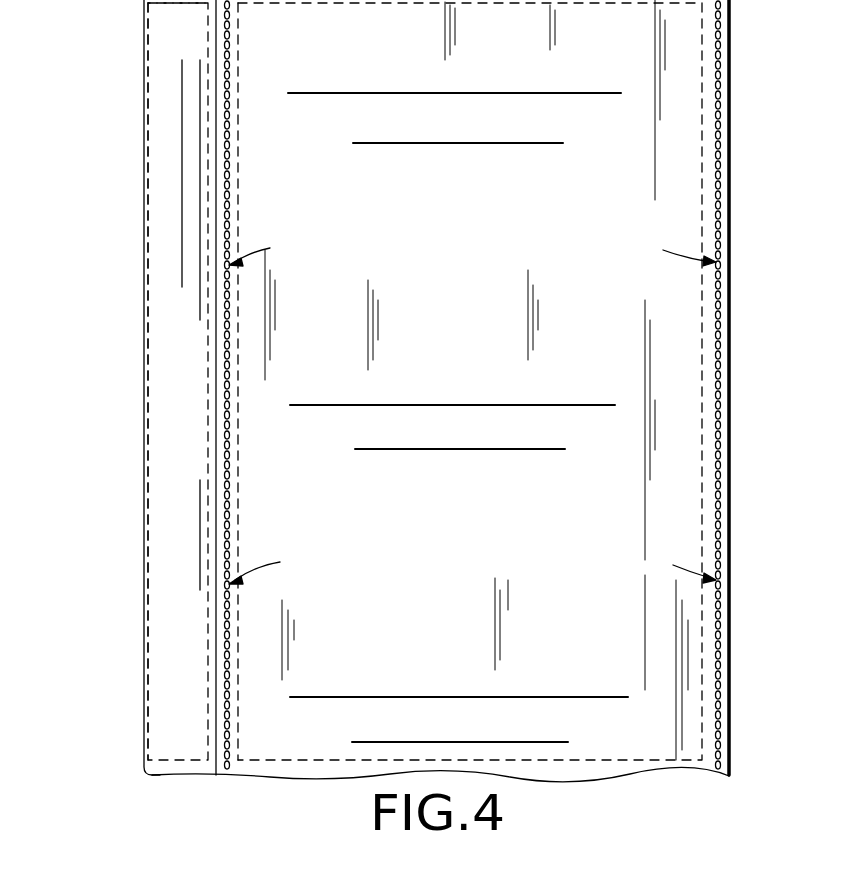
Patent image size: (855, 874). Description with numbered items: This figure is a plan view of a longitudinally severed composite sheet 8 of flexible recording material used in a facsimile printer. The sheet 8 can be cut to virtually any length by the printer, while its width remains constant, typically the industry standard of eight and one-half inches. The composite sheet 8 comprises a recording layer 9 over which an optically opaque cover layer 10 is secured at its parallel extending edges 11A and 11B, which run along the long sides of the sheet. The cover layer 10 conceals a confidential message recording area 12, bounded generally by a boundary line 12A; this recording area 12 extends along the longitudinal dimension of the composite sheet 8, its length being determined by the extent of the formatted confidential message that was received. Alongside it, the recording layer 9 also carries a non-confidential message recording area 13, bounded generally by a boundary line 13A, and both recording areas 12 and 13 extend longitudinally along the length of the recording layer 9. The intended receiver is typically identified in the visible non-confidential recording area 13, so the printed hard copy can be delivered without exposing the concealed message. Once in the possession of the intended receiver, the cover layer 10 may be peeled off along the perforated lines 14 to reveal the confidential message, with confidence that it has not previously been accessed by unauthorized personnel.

The composite sheet 8 is at (93, 402).
The recording layer 9 is at (172, 769).
The cover layer 10 is at (255, 640).
The parallel extending edge 11A is at (218, 540).
The parallel extending edge 11B is at (730, 715).
The confidential message recording area 12 is at (267, 43).
The boundary line 12A is at (238, 68).
The non-confidential message recording area 13 is at (173, 173).
The boundary line 13A is at (147, 228).
The perforated lines 14 is at (225, 615).